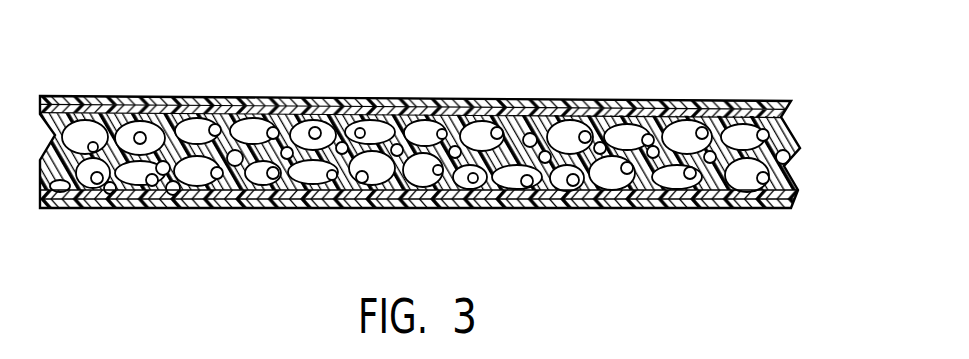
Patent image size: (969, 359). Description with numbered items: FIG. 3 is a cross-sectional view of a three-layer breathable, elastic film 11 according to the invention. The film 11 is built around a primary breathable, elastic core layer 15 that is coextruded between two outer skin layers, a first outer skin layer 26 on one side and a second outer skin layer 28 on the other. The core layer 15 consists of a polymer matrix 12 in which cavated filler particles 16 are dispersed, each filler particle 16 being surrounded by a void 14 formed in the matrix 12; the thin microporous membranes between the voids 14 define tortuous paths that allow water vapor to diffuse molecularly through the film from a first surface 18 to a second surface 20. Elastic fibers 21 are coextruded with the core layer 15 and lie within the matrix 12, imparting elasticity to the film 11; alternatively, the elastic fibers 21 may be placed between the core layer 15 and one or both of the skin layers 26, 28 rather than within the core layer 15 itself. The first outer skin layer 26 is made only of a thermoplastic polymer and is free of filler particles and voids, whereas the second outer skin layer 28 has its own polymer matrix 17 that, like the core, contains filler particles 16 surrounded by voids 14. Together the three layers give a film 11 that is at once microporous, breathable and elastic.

The multilayer breathable, elastic film 11 is at (793, 193).
The polymer matrix 12 is at (697, 105).
The first surface 18 is at (125, 105).
The first outer skin layer 26 is at (247, 105).
The primary breathable, elastic core layer 15 is at (417, 153).
The elastic fibers 21 is at (455, 150).
The voids 14 is at (513, 180).
The filler particles 16 is at (527, 182).
The second surface 20 is at (87, 203).
The second outer skin layer 28 is at (228, 205).
The polymer matrix 17 is at (372, 200).